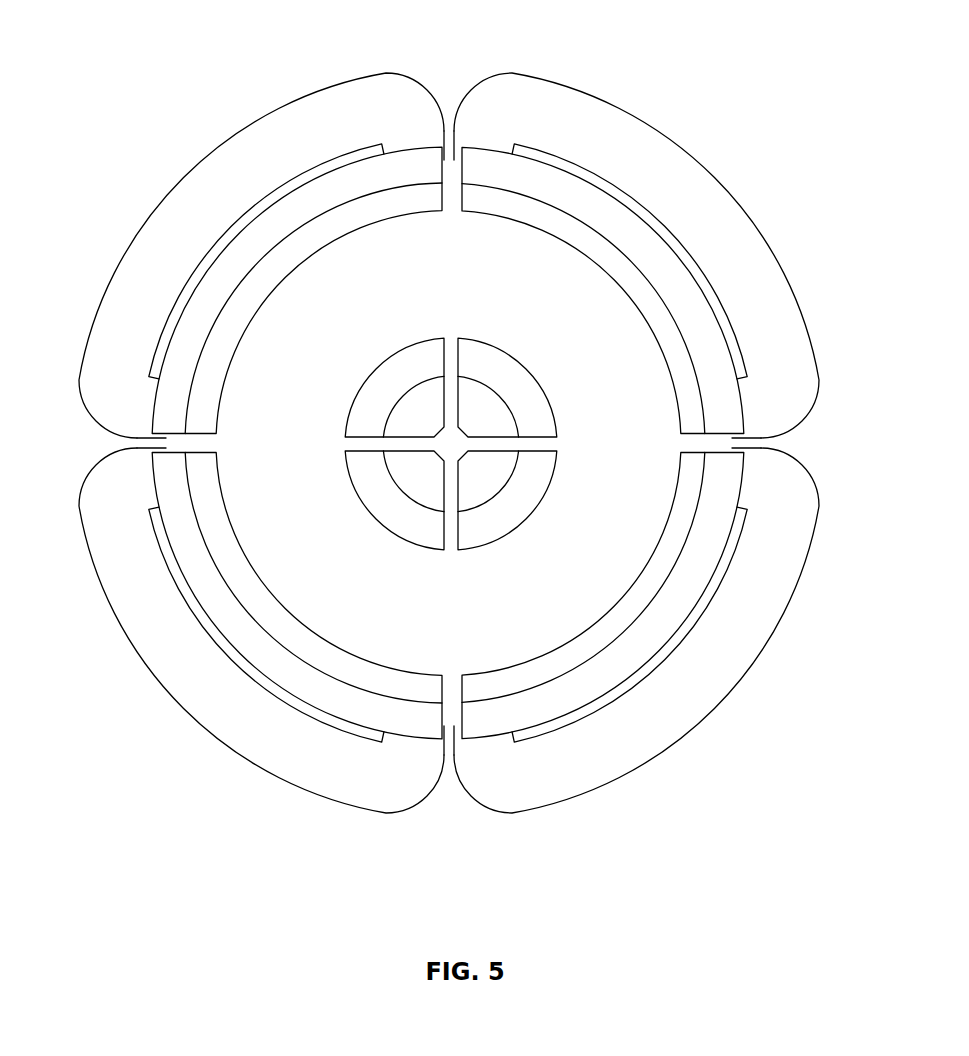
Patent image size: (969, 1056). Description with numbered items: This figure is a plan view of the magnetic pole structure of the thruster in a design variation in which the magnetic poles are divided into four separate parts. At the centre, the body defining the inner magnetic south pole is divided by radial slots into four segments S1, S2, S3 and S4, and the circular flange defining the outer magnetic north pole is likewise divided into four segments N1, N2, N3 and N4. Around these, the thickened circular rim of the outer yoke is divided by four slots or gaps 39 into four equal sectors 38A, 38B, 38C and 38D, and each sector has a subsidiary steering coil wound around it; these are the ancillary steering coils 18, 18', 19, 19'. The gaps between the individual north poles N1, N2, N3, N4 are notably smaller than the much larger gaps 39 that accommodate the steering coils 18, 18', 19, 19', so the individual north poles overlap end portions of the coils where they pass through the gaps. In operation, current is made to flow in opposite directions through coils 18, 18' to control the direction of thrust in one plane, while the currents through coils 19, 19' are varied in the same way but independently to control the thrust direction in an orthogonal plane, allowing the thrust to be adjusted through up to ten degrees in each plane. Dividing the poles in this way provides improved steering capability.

The ancillary steering coil 18 is at (646, 630).
The ancillary steering coil 18' is at (249, 255).
The ancillary steering coil 19 is at (636, 255).
The ancillary steering coil 19' is at (258, 630).
The rim sector 38A is at (663, 670).
The rim sector 38B is at (197, 262).
The rim sector 38C is at (718, 295).
The rim sector 38D is at (223, 650).
The slot or gap 39 is at (497, 150).
The outer magnetic north pole segment N1 is at (604, 632).
The outer magnetic north pole segment N2 is at (282, 273).
The outer magnetic north pole segment N3 is at (622, 273).
The outer magnetic north pole segment N4 is at (296, 632).
The inner magnetic south pole segment S1 is at (538, 480).
The inner magnetic south pole segment S2 is at (365, 404).
The inner magnetic south pole segment S3 is at (540, 405).
The inner magnetic south pole segment S4 is at (363, 480).